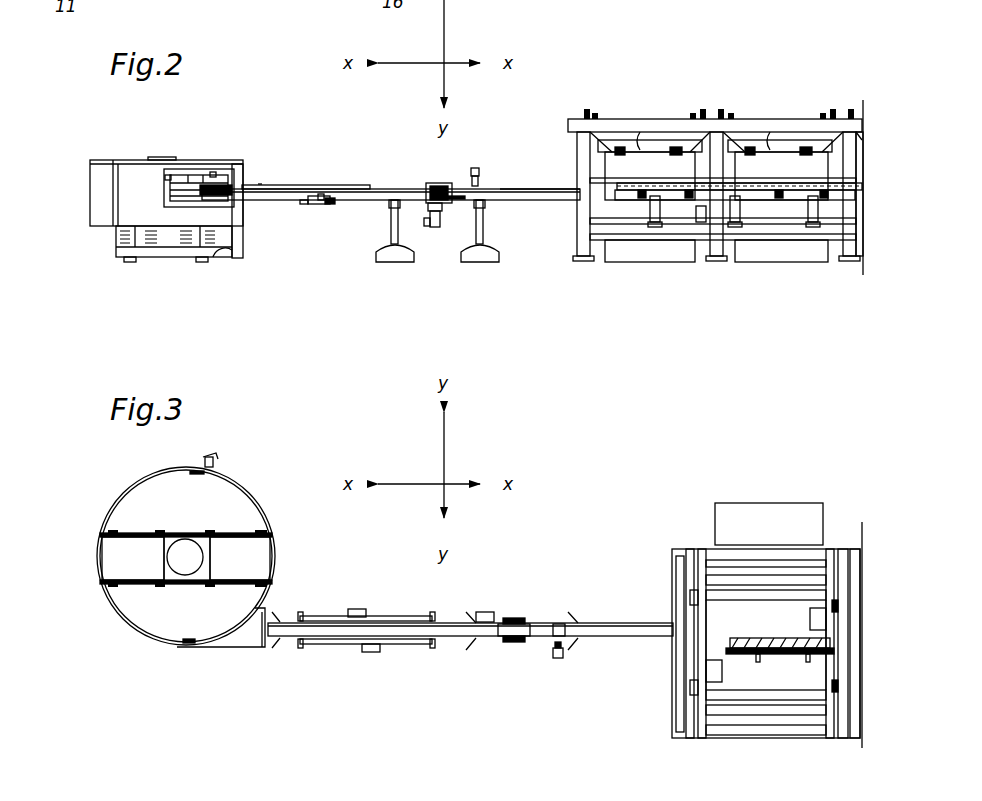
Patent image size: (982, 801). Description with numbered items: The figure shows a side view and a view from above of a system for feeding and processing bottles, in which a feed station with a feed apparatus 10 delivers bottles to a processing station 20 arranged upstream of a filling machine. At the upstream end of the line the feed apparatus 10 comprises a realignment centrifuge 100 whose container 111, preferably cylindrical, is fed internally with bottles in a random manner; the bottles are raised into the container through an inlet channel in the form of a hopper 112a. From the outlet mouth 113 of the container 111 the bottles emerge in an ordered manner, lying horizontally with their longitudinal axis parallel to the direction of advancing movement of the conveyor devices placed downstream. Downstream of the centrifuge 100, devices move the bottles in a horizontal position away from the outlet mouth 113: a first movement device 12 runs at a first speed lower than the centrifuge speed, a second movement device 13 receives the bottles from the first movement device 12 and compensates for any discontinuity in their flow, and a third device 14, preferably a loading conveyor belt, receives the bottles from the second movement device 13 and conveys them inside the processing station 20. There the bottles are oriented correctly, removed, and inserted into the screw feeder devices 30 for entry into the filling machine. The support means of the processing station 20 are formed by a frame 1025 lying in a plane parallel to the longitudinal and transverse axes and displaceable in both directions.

In FIG. 2, the feed apparatus 10 is at (582, 306).
In FIG. 3, the feed apparatus 10 is at (470, 633).
In FIG. 2, the first movement device 12 is at (316, 215).
In FIG. 2, the second movement device 13 is at (440, 215).
In FIG. 2, the third device 14 is at (527, 213).
In FIG. 2, the processing station 20 is at (703, 87).
In FIG. 3, the processing station 20 is at (738, 478).
In FIG. 2, the screw feeder devices 30 is at (655, 195).
In FIG. 3, the screw feeder devices 30 is at (765, 635).
In FIG. 2, the realignment centrifuge 100 is at (105, 262).
In FIG. 3, the realignment centrifuge 100 is at (250, 472).
In FIG. 2, the container 111 is at (133, 188).
In FIG. 3, the container 111 is at (138, 500).
In FIG. 3, the hopper 112a is at (183, 562).
In FIG. 2, the outlet mouth 113 is at (215, 181).
In FIG. 3, the outlet mouth 113 is at (250, 636).
In FIG. 2, the frame 1025 is at (780, 150).
In FIG. 3, the frame 1025 is at (842, 560).